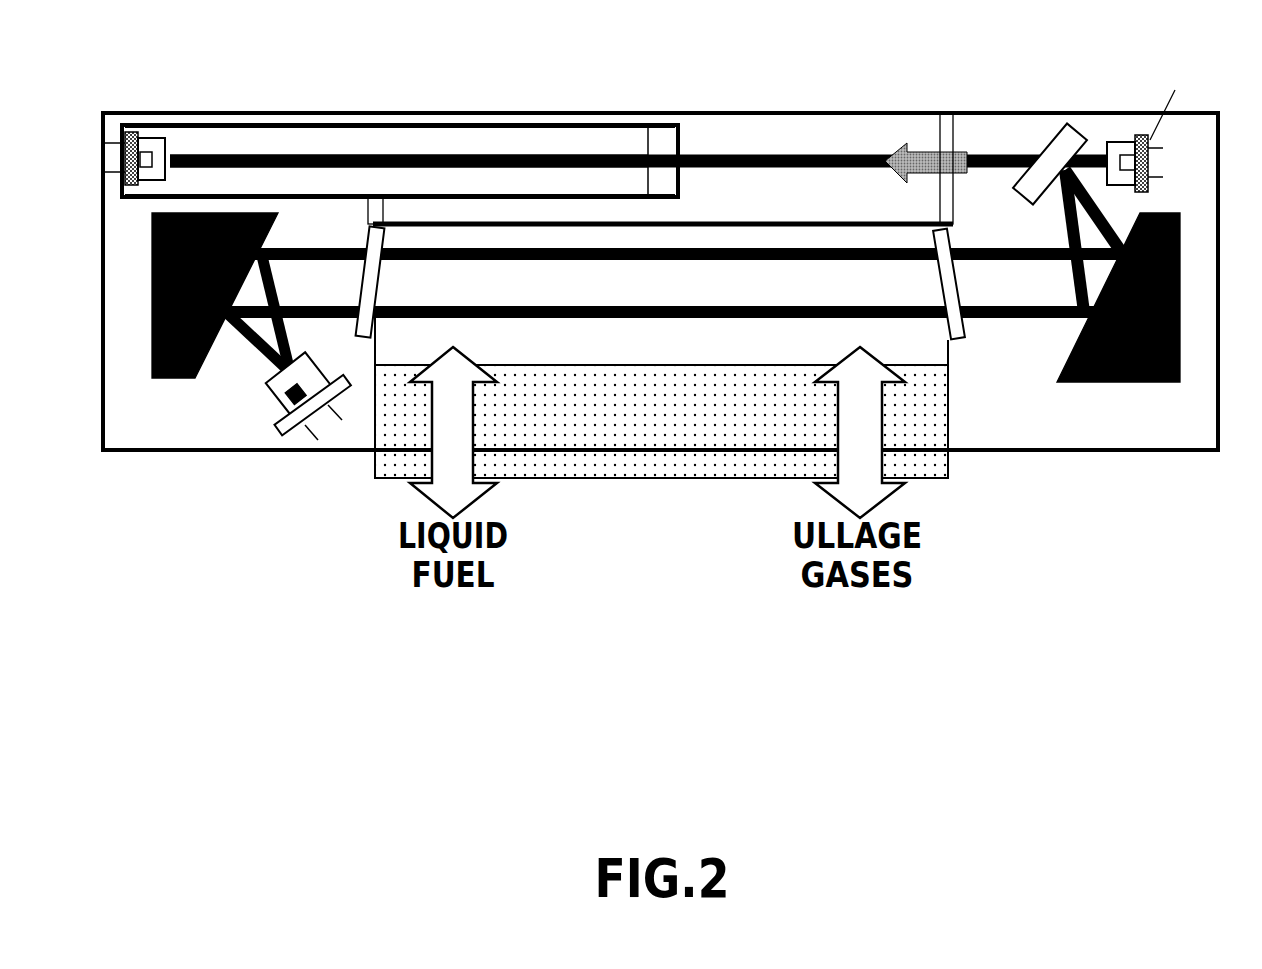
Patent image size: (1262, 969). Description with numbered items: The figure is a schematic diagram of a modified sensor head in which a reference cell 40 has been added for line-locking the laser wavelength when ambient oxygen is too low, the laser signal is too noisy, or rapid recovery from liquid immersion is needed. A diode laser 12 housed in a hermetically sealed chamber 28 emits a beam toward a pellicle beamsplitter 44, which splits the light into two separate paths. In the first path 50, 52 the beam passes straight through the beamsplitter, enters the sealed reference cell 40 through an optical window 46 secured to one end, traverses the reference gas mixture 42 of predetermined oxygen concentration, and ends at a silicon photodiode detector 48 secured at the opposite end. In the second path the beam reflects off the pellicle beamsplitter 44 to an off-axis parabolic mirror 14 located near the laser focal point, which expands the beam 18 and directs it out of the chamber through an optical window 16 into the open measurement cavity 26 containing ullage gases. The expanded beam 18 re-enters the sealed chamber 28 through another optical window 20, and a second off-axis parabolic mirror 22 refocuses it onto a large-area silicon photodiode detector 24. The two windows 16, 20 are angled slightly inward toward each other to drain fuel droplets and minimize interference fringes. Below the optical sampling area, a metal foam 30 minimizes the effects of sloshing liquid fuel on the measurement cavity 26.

The diode laser 12 is at (1118, 140).
The off-axis parabolic mirror 14 is at (1120, 383).
The optical window 16 is at (935, 282).
The expanded beam 18 is at (676, 283).
The optical window 20 is at (382, 282).
The off-axis parabolic mirror 22 is at (172, 380).
The silicon photodiode detector 24 is at (302, 435).
The measurement cavity 26 is at (661, 341).
The sealed chamber 28 is at (660, 168).
The metal foam 30 is at (661, 432).
The reference cell 40 is at (272, 118).
The gas mixture 42 is at (385, 137).
The pellicle beamsplitter 44 is at (1047, 140).
The optical window 46 is at (658, 137).
The silicon photodiode detector 48 is at (155, 133).
The first path 50 is at (853, 150).
The first path 52 is at (548, 150).